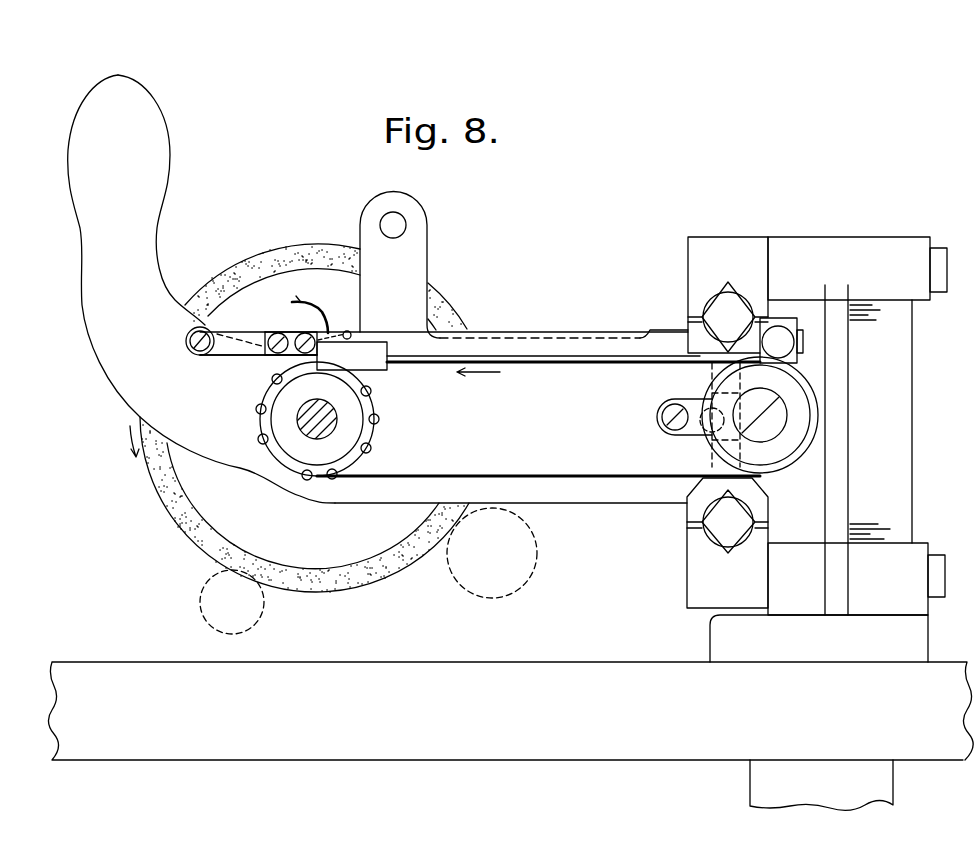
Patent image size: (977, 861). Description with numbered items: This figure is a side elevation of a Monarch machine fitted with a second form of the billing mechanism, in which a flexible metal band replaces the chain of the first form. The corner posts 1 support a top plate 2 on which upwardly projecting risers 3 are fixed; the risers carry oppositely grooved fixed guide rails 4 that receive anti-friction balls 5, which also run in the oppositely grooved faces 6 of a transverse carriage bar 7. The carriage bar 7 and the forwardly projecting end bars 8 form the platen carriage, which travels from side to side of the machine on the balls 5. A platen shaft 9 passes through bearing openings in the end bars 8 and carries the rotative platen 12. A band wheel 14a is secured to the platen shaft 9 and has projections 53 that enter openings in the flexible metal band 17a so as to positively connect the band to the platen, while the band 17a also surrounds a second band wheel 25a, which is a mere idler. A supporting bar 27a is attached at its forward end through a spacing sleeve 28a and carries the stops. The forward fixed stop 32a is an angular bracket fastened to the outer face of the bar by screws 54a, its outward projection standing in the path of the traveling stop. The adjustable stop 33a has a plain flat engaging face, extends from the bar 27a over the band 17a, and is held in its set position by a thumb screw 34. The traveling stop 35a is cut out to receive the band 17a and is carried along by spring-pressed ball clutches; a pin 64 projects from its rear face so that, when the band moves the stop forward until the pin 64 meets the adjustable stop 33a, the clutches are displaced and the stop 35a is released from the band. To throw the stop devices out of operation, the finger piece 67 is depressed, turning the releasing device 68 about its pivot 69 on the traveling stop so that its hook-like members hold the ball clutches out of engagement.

The corner posts 1 is at (821, 785).
The top plate 2 is at (510, 711).
The riser 3 is at (828, 449).
The fixed guide rail 4 is at (727, 422).
The anti-friction ball 5 is at (728, 419).
The grooved face 6 is at (692, 313).
The transverse carriage bar 7 is at (742, 452).
The end bar 8 is at (450, 417).
The platen shaft 9 is at (313, 429).
The platen 12 is at (190, 523).
The band wheel 14a is at (357, 414).
The flexible metal band 17a is at (522, 475).
The band wheel 25a is at (713, 387).
The supporting bar 27a is at (477, 337).
The spacing sleeve 28a is at (189, 350).
The forward fixed stop 32a is at (268, 356).
The adjustable stop 33a is at (770, 318).
The thumb screw 34 is at (778, 342).
The traveling stop 35a is at (370, 342).
The projections 53 is at (367, 451).
The screws 54a is at (282, 338).
The pin 64 is at (387, 356).
The finger piece 67 is at (303, 288).
The releasing device 68 is at (316, 311).
The pivot 69 is at (347, 331).